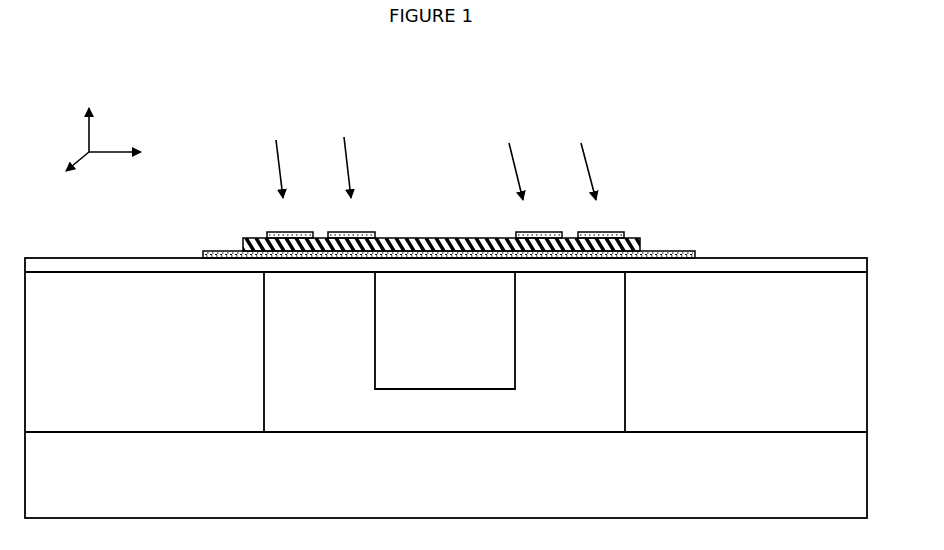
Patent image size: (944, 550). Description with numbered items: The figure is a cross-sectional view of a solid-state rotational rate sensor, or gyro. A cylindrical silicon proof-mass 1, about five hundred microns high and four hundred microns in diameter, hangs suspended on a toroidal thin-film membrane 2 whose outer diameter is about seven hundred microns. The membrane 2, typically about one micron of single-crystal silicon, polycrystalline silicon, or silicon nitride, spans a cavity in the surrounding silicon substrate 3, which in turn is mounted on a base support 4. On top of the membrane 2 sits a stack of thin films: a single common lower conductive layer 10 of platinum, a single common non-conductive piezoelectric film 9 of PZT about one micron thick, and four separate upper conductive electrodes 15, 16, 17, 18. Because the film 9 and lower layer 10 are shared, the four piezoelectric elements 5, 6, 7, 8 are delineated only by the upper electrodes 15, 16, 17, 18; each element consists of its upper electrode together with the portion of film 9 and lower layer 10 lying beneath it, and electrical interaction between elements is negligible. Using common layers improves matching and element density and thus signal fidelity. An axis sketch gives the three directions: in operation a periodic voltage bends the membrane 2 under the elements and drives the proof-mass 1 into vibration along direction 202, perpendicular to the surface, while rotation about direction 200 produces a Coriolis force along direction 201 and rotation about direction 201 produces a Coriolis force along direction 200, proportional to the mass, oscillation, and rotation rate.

The proof-mass 1 is at (385, 358).
The thin-film membrane 2 is at (343, 265).
The silicon substrate 3 is at (257, 357).
The base support 4 is at (607, 492).
The piezoelectric element 5 is at (586, 160).
The piezoelectric element 6 is at (513, 160).
The piezoelectric element 7 is at (277, 156).
The piezoelectric element 8 is at (346, 155).
The piezoelectric film 9 is at (460, 238).
The lower conductive layer 10 is at (672, 252).
The upper conductive electrode 15 is at (616, 232).
The upper conductive electrode 16 is at (550, 232).
The upper conductive electrode 17 is at (297, 232).
The upper conductive electrode 18 is at (365, 232).
The direction 200 is at (136, 153).
The direction 201 is at (69, 173).
The direction 202 is at (109, 122).